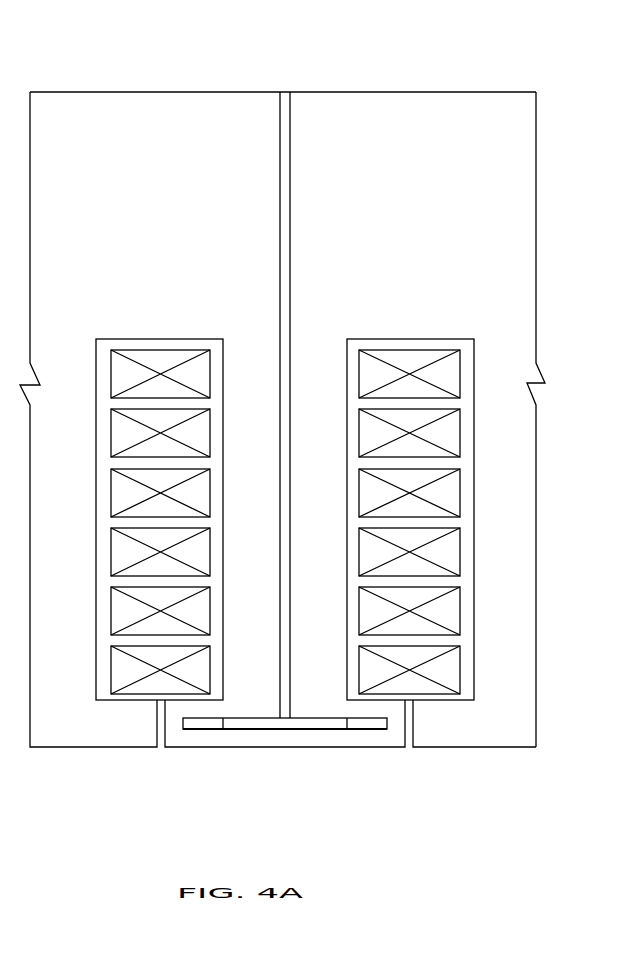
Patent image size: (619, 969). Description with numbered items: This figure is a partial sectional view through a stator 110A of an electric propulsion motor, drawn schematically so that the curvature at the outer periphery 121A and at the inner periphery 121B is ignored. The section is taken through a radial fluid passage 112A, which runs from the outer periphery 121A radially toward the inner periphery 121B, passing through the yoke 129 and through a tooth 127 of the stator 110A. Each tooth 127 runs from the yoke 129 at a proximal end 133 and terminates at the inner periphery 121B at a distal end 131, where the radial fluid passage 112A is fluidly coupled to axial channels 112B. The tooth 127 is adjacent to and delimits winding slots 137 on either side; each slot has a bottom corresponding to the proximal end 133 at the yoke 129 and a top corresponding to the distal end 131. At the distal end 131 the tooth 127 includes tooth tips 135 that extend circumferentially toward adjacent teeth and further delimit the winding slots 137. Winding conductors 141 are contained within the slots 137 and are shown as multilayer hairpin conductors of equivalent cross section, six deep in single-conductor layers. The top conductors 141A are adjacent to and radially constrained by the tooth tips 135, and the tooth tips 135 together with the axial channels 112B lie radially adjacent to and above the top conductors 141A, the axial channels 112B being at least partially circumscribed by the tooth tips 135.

The stator 110A is at (195, 45).
The outer periphery 121A is at (244, 92).
The yoke 129 is at (536, 175).
The inner periphery 121B is at (475, 747).
The radial fluid passage 112A is at (290, 175).
The proximal end 133 is at (253, 343).
The winding slots 137 is at (465, 410).
The tooth 127 is at (317, 425).
The winding conductors 141 is at (483, 513).
The top conductors 141A is at (460, 668).
The tooth tips 135 is at (383, 747).
The distal end 131 is at (292, 765).
The axial channels 112B is at (204, 725).